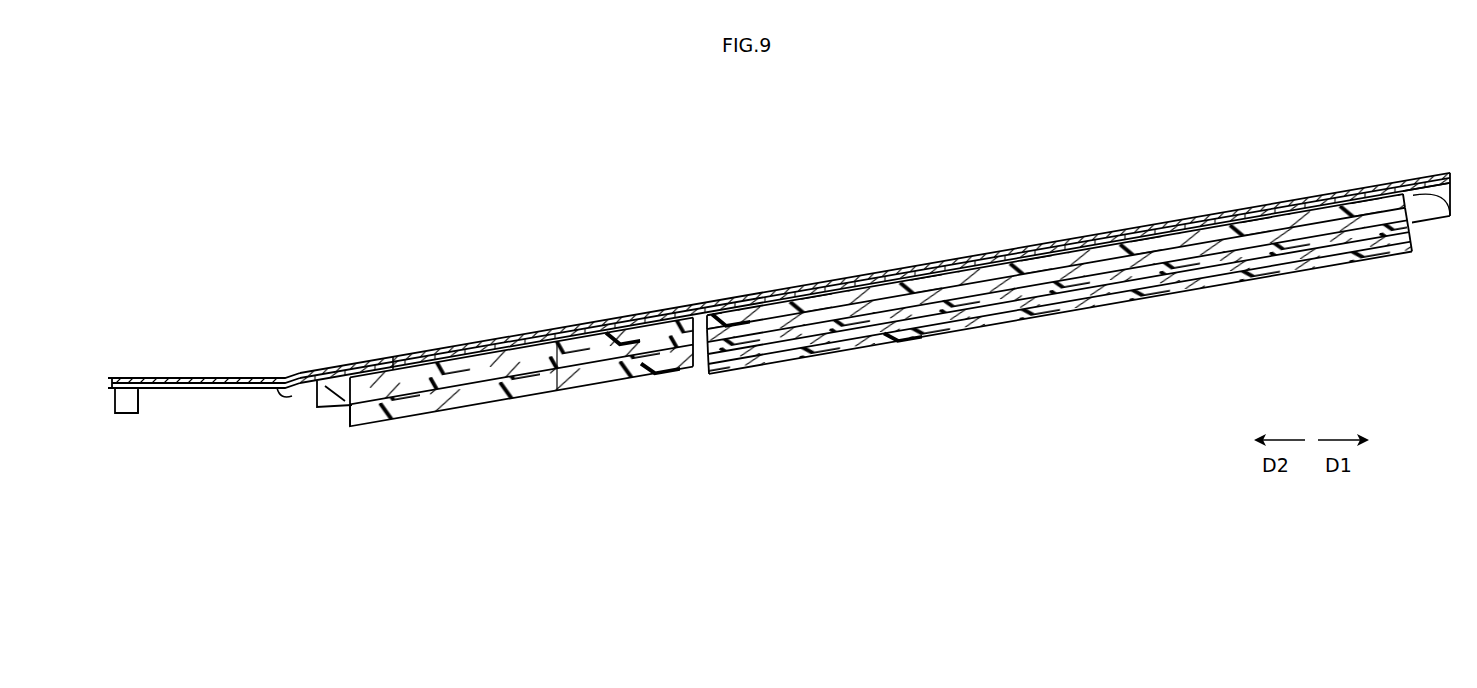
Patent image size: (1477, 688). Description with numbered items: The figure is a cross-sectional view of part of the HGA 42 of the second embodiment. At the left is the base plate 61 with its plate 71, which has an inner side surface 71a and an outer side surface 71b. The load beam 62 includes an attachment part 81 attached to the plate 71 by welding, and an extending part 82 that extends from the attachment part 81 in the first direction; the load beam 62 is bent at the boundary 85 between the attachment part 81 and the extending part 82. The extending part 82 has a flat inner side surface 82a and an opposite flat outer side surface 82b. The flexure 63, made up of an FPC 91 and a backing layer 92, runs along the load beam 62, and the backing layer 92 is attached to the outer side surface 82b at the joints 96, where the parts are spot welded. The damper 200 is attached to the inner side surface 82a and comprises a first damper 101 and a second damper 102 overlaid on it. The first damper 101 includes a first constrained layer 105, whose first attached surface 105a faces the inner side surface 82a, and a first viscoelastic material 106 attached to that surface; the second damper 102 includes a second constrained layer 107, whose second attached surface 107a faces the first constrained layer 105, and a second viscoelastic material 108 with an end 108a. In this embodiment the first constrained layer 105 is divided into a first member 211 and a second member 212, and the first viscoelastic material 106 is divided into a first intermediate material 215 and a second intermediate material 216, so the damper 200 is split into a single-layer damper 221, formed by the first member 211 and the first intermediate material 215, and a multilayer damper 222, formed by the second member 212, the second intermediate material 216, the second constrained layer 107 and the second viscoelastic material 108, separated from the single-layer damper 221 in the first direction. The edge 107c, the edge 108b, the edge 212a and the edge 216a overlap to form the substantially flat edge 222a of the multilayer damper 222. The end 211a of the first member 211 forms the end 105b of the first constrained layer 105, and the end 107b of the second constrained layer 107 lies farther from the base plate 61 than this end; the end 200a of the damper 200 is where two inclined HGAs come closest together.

The HGA 42 is at (405, 202).
The base plate 61 is at (139, 399).
The load beam 62 is at (333, 407).
The flexure 63 is at (232, 378).
The plate 71 is at (130, 408).
The inner side surface 71a is at (115, 414).
The outer side surface 71b is at (132, 379).
The attachment part 81 is at (212, 390).
The extending part 82 is at (561, 394).
The inner side surface 82a is at (561, 394).
The outer side surface 82b is at (557, 362).
The boundary 85 is at (286, 388).
The FPC 91 is at (425, 351).
The backing layer 92 is at (393, 363).
The joints 96 is at (1342, 189).
The first damper 101 is at (617, 384).
The second damper 102 is at (1068, 305).
The first constrained layer 105 is at (521, 375).
The first attached surface 105a is at (513, 348).
The end of the first constrained layer 105b is at (396, 470).
The first viscoelastic material 106 is at (630, 270).
The second constrained layer 107 is at (1062, 306).
The second attached surface 107a is at (1063, 293).
The end of the second constrained layer 107b is at (760, 361).
The edge of the second constrained layer 107c is at (1413, 243).
The second viscoelastic material 108 is at (1070, 355).
The end of the second viscoelastic material 108a is at (706, 362).
The edge of the second viscoelastic material 108b is at (1419, 235).
The damper 200 is at (1068, 305).
The end of the damper 200a is at (396, 470).
The first member 211 is at (521, 375).
The end of the first member 211a is at (355, 426).
The second member 212 is at (1245, 243).
The edge of the second member 212a is at (1433, 185).
The first intermediate material 215 is at (623, 340).
The second intermediate material 216 is at (930, 287).
The edge of the second intermediate material 216a is at (1413, 187).
The single-layer damper 221 is at (656, 376).
The multilayer damper 222 is at (898, 345).
The edge of the multilayer damper 222a is at (692, 330).